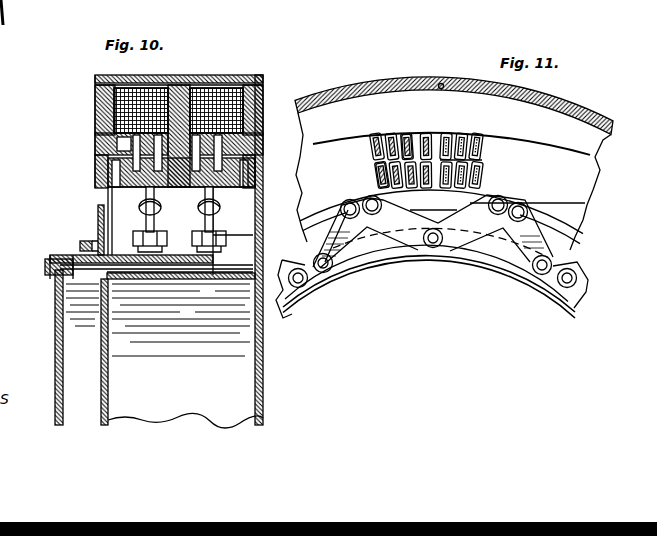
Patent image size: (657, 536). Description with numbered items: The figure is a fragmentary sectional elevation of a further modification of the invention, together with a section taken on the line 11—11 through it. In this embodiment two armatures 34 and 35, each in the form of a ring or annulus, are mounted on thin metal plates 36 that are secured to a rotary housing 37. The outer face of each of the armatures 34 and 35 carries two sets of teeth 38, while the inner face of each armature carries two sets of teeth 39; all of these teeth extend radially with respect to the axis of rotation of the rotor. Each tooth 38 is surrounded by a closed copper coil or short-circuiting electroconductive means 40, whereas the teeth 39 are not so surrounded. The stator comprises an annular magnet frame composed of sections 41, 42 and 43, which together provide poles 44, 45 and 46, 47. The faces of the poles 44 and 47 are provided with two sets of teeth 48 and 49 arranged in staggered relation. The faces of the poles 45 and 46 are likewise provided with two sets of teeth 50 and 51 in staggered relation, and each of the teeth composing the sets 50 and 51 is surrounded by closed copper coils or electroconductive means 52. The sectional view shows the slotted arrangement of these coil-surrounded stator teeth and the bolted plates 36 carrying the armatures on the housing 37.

In FIG. 10, the section line 11 is at (233, 75).
In FIG. 10, the armature 34 is at (146, 203).
In FIG. 10, the armature 35 is at (220, 220).
In FIG. 10, the thin metal plates 36 is at (154, 222).
In FIG. 11, the thin metal plates 36 is at (525, 272).
In FIG. 10, the rotary housing 37 is at (68, 258).
In FIG. 10, the teeth 38 is at (123, 149).
In FIG. 11, the teeth 38 is at (487, 153).
In FIG. 10, the teeth 39 is at (217, 122).
In FIG. 10, the closed copper coil 40 is at (247, 127).
In FIG. 11, the closed copper coil 40 is at (492, 163).
In FIG. 10, the magnet frame section 41 is at (263, 80).
In FIG. 10, the magnet frame section 42 is at (181, 122).
In FIG. 10, the magnet frame section 43 is at (95, 103).
In FIG. 10, the pole 44 is at (256, 150).
In FIG. 10, the pole 45 is at (170, 105).
In FIG. 10, the pole 46 is at (112, 170).
In FIG. 10, the pole 47 is at (117, 140).
In FIG. 10, the teeth 48 is at (95, 134).
In FIG. 10, the teeth 49 is at (215, 190).
In FIG. 11, the teeth 50 is at (390, 140).
In FIG. 11, the teeth 51 is at (378, 183).
In FIG. 11, the closed copper coils 52 is at (423, 132).